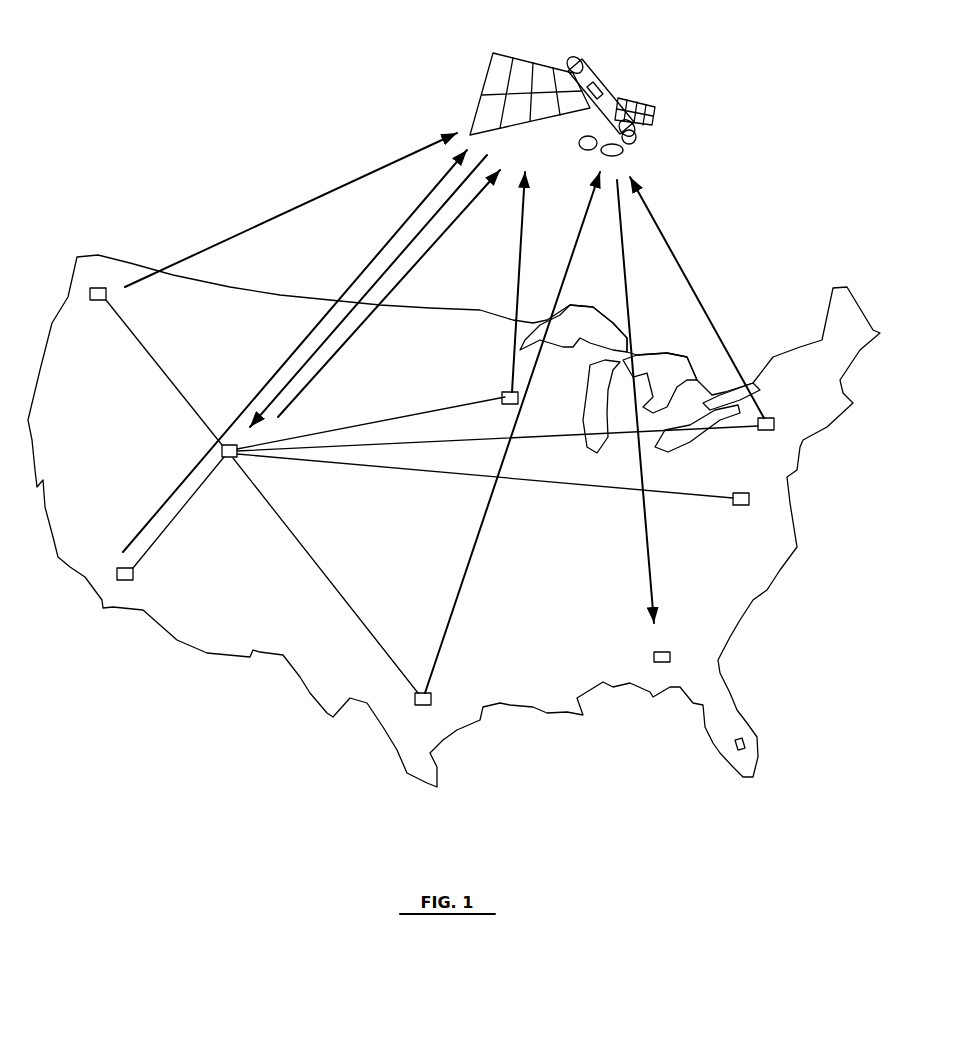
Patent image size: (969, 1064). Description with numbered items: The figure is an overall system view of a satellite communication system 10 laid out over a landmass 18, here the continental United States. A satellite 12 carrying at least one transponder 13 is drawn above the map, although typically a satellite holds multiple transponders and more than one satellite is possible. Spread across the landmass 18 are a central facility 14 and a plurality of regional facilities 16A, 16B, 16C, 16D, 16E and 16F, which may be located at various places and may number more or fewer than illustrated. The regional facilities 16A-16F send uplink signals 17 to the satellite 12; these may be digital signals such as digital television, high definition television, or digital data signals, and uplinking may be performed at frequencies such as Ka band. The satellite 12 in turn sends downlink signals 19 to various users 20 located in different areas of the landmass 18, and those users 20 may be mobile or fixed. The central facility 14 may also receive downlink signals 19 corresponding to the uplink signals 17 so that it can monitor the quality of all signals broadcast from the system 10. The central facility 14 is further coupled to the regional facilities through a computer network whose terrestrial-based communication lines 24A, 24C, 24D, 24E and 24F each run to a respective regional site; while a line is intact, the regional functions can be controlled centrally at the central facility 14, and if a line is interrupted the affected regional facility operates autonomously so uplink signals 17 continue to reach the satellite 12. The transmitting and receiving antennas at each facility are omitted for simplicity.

The communication system 10 is at (135, 178).
The satellite 12 is at (593, 90).
The transponder 13 is at (595, 85).
The central facility 14 is at (232, 458).
The regional facility 16A is at (100, 288).
The regional facility 16B is at (126, 581).
The regional facility 16C is at (505, 392).
The regional facility 16D is at (770, 418).
The regional facility 16E is at (736, 494).
The regional facility 16F is at (433, 697).
The uplink signals 17 is at (283, 212).
The landmass 18 is at (753, 727).
The downlink signals 19 is at (423, 223).
The users 20 is at (660, 652).
The communication line 24A is at (162, 365).
The communication line 24C is at (353, 427).
The communication line 24D is at (550, 432).
The communication line 24E is at (545, 487).
The communication line 24F is at (303, 545).